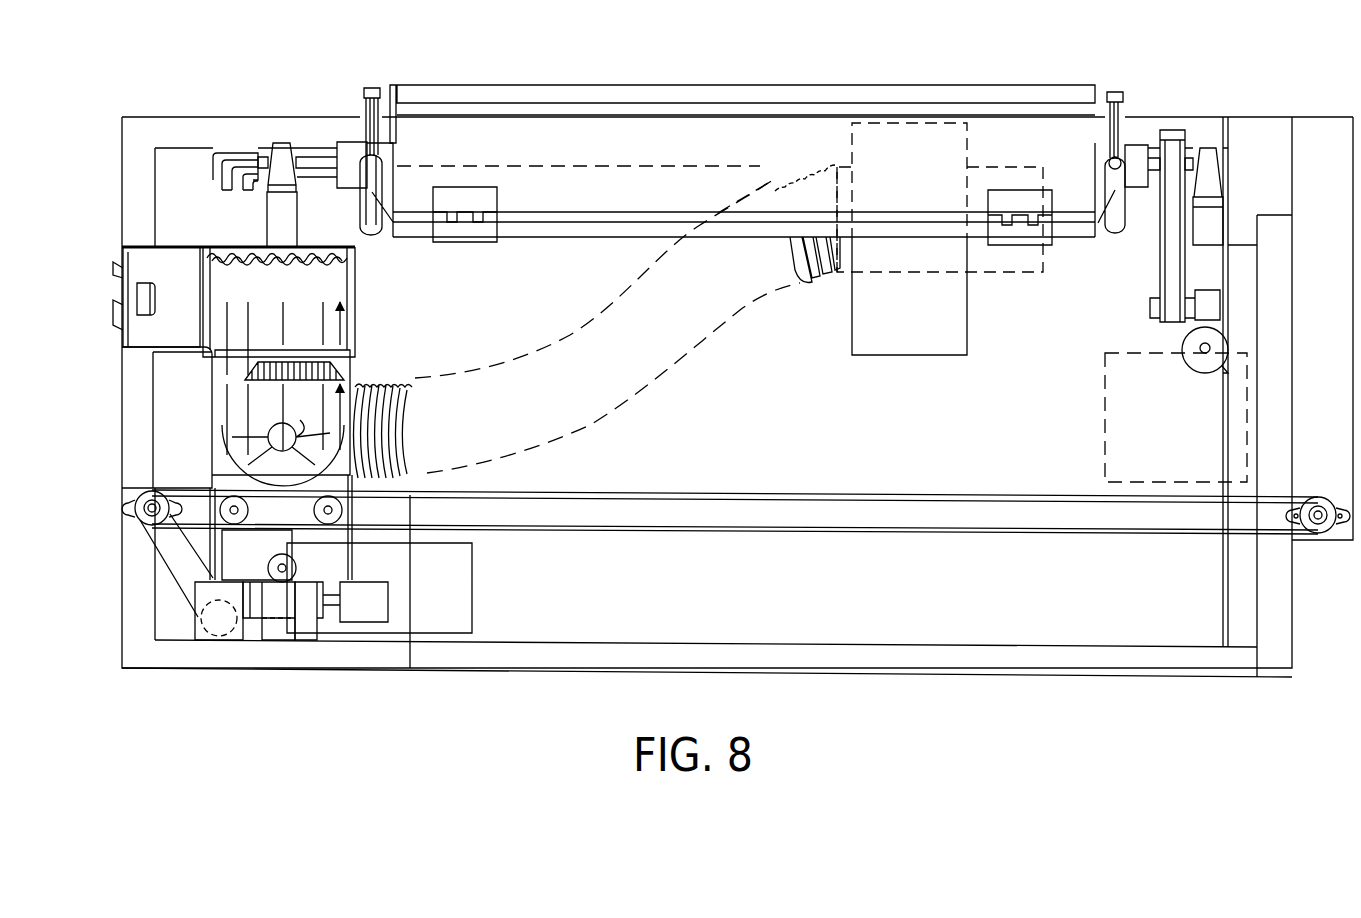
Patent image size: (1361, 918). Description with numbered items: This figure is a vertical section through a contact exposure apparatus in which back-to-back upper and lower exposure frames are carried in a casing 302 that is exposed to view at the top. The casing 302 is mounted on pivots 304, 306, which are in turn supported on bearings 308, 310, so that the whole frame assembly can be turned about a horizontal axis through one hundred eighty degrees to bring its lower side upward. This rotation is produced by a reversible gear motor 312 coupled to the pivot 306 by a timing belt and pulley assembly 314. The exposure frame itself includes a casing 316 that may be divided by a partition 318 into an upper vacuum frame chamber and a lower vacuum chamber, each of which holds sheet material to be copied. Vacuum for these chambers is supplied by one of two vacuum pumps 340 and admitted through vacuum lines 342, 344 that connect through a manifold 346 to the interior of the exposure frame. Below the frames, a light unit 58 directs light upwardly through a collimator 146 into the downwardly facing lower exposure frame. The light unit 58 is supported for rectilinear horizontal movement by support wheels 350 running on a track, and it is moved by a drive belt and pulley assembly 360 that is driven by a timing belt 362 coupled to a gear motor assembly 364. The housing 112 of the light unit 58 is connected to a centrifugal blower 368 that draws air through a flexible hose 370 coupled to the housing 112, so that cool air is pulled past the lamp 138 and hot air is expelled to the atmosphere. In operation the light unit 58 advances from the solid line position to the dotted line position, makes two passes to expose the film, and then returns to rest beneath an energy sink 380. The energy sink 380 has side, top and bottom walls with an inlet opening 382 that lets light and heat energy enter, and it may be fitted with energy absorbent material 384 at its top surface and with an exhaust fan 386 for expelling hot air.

The casing 302 is at (467, 90).
The pivot 304 is at (310, 157).
The pivot 306 is at (1208, 160).
The bearing 308 is at (283, 148).
The bearing 310 is at (1205, 148).
The reversible gear motor 312 is at (1183, 350).
The timing belt and pulley assembly 314 is at (1172, 133).
The casing 316 is at (655, 130).
The partition 318 is at (740, 170).
The vacuum pump 340 is at (590, 230).
The vacuum line 342 is at (221, 185).
The vacuum line 344 is at (243, 195).
The manifold 346 is at (217, 168).
The support wheels 350 is at (296, 568).
The drive belt and pulley assembly 360 is at (565, 493).
The timing belt 362 is at (176, 585).
The gear motor assembly 364 is at (305, 617).
The centrifugal blower 368 is at (968, 300).
The flexible hose 370 is at (725, 335).
The energy sink 380 is at (358, 275).
The inlet opening 382 is at (315, 352).
The energy absorbent material 384 is at (266, 252).
The exhaust fan 386 is at (125, 266).
The collimator 146 is at (220, 372).
The light unit 58 is at (212, 405).
The housing 112 is at (213, 462).
The lamp 138 is at (317, 435).